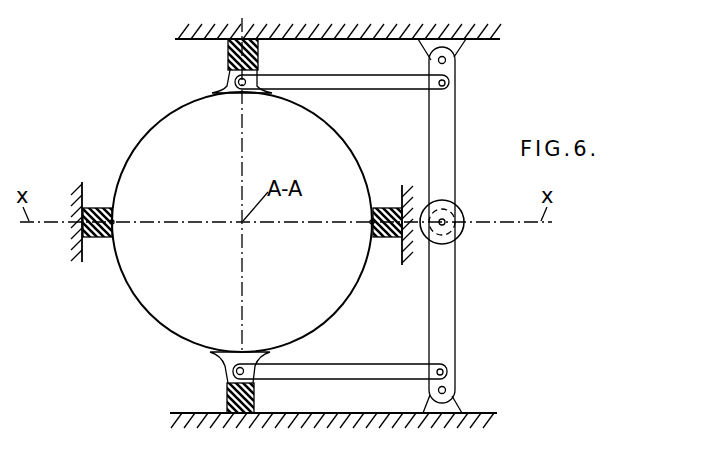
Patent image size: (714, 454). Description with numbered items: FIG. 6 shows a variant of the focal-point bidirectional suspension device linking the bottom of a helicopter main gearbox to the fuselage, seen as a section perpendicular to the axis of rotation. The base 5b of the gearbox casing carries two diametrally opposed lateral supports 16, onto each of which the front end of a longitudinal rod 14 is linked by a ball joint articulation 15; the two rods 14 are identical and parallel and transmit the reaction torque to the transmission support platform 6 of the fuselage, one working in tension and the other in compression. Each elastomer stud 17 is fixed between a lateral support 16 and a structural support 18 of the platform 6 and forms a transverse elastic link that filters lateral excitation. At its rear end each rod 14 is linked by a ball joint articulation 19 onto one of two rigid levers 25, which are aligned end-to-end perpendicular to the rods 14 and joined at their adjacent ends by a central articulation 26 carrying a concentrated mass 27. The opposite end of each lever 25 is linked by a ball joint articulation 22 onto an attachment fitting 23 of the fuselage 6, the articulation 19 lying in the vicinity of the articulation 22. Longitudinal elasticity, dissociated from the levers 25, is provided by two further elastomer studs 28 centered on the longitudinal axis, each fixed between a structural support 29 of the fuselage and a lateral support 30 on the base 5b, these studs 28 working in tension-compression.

The base of the box 5b is at (158, 299).
The transmission support platform 6 is at (466, 41).
The rod 14 is at (330, 82).
The ball joint articulation 15 is at (246, 88).
The lateral support 16 is at (224, 87).
The elastomer stud 17 is at (228, 60).
The structural support 18 is at (188, 30).
The ball joint articulation 19 is at (434, 93).
The ball joint articulation 22 is at (448, 63).
The attachment fitting 23 is at (420, 46).
The lever 25 is at (448, 167).
The central articulation 26 is at (445, 222).
The concentrated mass 27 is at (462, 237).
The elastomer stud 28 is at (100, 207).
The structural support 29 is at (72, 210).
The lateral support 30 is at (112, 218).